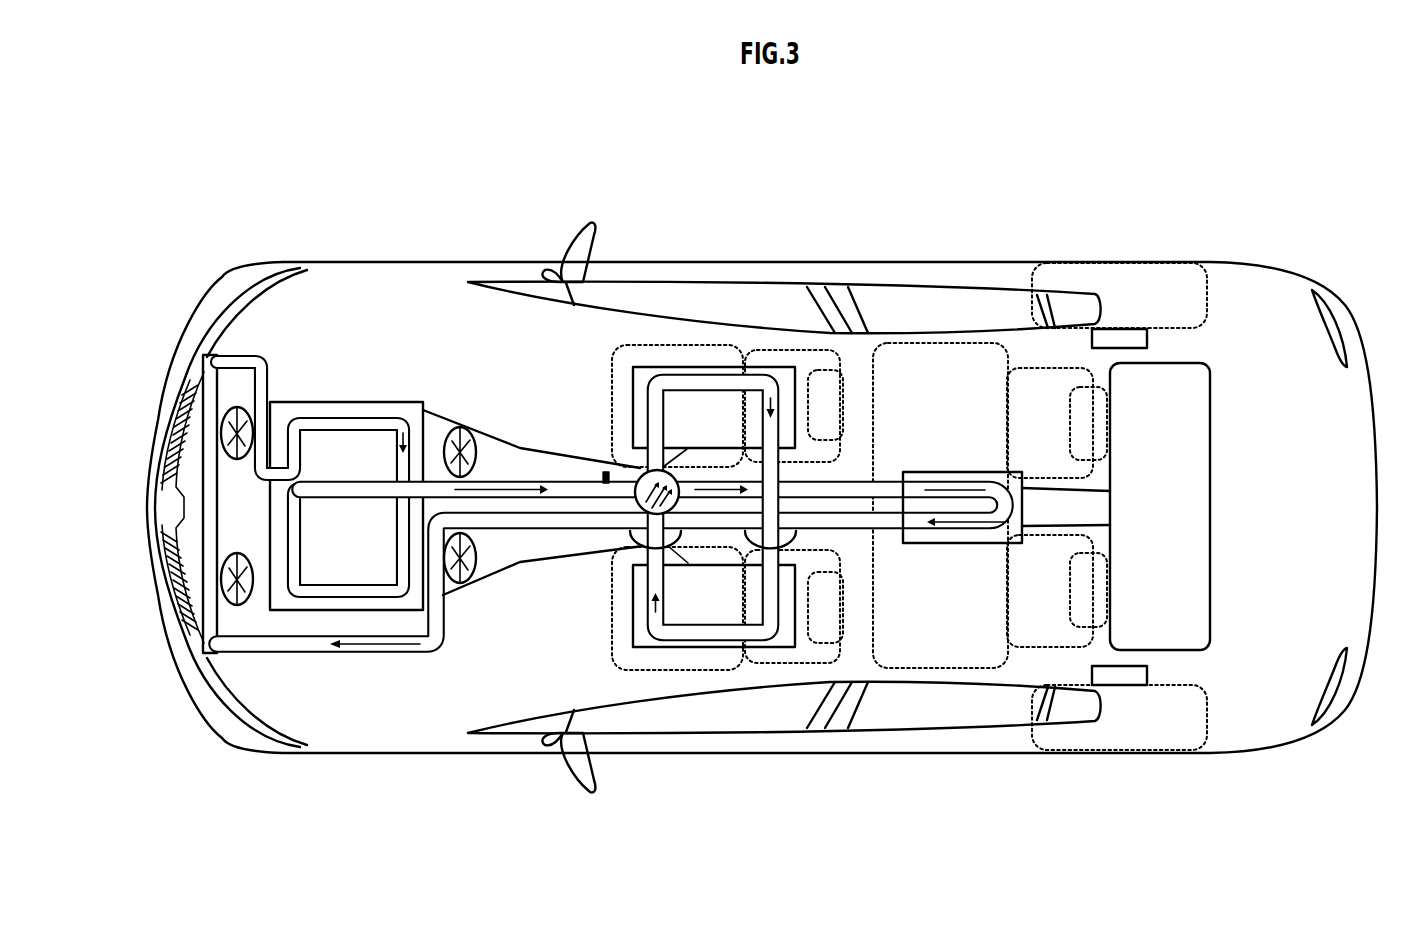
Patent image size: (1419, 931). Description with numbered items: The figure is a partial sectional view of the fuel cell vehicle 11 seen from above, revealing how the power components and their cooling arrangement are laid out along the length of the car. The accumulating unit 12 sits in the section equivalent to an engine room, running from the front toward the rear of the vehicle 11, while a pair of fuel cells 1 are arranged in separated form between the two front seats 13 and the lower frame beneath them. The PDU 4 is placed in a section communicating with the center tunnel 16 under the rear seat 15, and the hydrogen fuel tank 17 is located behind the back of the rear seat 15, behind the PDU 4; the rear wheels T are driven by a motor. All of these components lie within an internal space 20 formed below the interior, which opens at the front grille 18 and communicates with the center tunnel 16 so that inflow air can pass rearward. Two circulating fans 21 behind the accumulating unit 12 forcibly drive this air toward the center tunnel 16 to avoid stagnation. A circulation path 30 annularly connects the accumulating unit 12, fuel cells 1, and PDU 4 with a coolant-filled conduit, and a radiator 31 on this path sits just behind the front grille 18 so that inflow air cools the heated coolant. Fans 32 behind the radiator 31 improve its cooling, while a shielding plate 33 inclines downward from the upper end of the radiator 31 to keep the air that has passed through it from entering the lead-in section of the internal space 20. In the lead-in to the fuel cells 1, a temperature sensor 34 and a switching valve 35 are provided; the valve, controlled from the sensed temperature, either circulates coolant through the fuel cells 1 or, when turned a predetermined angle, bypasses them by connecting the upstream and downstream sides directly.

The fuel cell 1 is at (643, 373).
The PDU 4 is at (945, 505).
The vehicle 11 is at (183, 236).
The accumulating unit 12 is at (320, 403).
The front seat 13 is at (838, 333).
The rear seat 15 is at (1008, 338).
The center tunnel 16 is at (803, 505).
The hydrogen fuel tank 17 is at (1170, 380).
The front grille 18 is at (168, 455).
The internal space 20 is at (495, 557).
The circulating fan 21 is at (455, 425).
The circulation path 30 is at (362, 400).
The radiator 31 is at (190, 630).
The fan 32 is at (246, 622).
The shielding plate 33 is at (250, 598).
The temperature sensor 34 is at (603, 472).
The switching valve 35 is at (643, 473).
The rear wheel T is at (1149, 278).